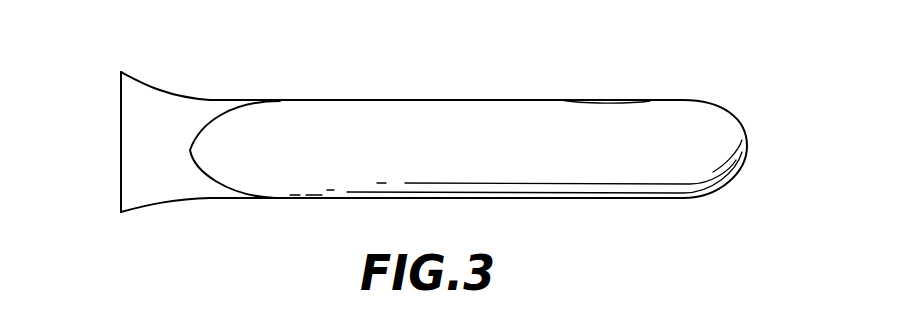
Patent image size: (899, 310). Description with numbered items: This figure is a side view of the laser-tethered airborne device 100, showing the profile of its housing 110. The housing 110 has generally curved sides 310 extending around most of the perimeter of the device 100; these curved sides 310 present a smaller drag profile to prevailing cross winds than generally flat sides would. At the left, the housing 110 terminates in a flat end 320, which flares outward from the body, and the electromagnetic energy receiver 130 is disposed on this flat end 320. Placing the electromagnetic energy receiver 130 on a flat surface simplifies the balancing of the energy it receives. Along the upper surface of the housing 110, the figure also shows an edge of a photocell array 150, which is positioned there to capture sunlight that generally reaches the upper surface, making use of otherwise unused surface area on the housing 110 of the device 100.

The laser-tethered airborne device 100 is at (768, 79).
The housing 110 is at (738, 170).
The electromagnetic energy receiver 130 is at (120, 141).
The photocell array 150 is at (610, 99).
The curved sides 310 is at (358, 100).
The flat end 320 is at (118, 92).